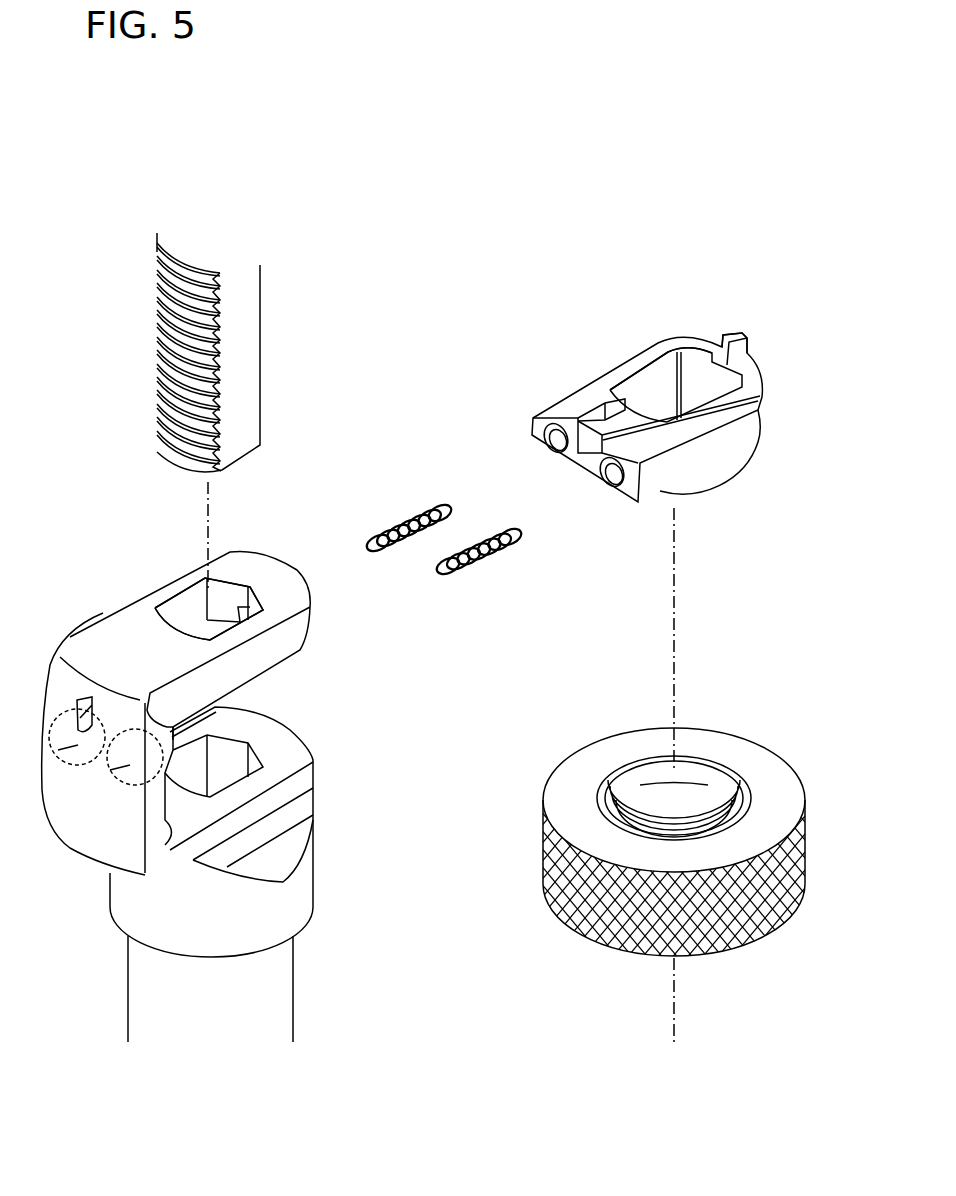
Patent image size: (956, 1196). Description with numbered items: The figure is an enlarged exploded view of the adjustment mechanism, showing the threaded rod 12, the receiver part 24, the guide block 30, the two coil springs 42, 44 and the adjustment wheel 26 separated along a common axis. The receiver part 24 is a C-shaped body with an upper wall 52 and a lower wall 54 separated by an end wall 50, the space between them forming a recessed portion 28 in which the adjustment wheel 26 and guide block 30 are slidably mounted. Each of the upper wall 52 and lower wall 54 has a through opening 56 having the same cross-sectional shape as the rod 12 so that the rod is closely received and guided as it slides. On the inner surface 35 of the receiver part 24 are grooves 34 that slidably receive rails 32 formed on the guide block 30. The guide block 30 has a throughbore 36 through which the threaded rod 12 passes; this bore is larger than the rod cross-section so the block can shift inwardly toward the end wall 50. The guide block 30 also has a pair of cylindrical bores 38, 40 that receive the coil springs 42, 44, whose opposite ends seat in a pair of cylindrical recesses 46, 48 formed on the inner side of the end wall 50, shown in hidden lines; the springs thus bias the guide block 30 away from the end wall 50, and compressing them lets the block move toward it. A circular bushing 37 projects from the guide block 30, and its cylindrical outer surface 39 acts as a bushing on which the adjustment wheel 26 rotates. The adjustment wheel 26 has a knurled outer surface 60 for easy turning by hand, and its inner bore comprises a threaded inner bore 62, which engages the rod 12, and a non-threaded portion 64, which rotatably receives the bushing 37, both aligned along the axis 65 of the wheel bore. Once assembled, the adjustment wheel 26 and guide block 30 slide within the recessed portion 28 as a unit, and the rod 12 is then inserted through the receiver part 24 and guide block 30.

The threaded rod 12 is at (247, 325).
The receiver part 24 is at (100, 617).
The adjustment wheel 26 is at (675, 840).
The recessed portion 28 is at (293, 702).
The guide block 30 is at (590, 378).
The rail 32 is at (735, 334).
The groove 34 is at (240, 622).
The inner surface 35 is at (277, 667).
The throughbore 36 is at (657, 372).
The circular bushing 37 is at (718, 493).
The cylindrical bore 38 is at (558, 440).
The cylindrical outer surface 39 is at (740, 457).
The cylindrical bore 40 is at (616, 478).
The coil spring 42 is at (400, 522).
The coil spring 44 is at (488, 560).
The cylindrical recess 46 is at (45, 762).
The cylindrical recess 48 is at (103, 768).
The end wall 50 is at (190, 858).
The upper wall 52 is at (265, 560).
The lower wall 54 is at (300, 778).
The through opening 56 is at (185, 608).
The knurled outer surface 60 is at (774, 898).
The threaded inner bore 62 is at (648, 810).
The non-threaded portion 64 is at (725, 780).
The axis 65 is at (684, 660).